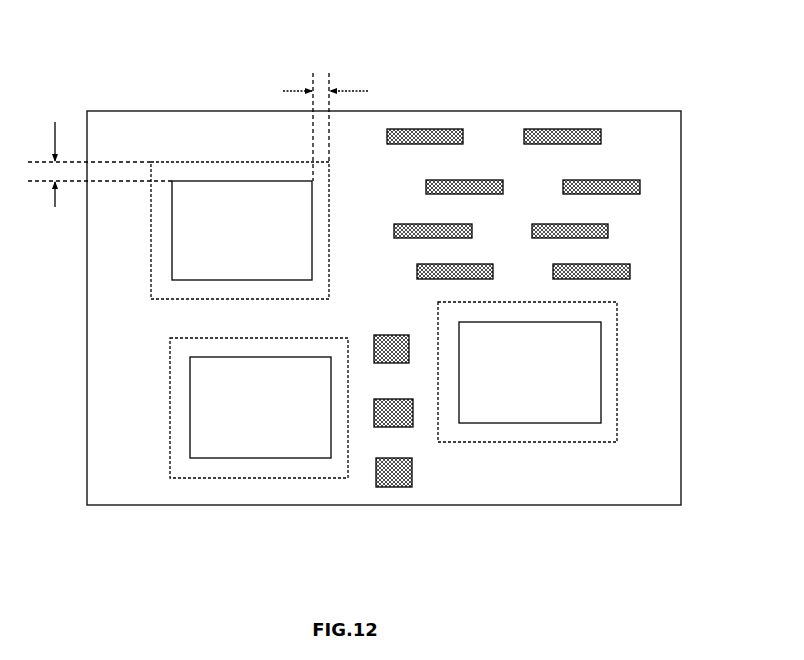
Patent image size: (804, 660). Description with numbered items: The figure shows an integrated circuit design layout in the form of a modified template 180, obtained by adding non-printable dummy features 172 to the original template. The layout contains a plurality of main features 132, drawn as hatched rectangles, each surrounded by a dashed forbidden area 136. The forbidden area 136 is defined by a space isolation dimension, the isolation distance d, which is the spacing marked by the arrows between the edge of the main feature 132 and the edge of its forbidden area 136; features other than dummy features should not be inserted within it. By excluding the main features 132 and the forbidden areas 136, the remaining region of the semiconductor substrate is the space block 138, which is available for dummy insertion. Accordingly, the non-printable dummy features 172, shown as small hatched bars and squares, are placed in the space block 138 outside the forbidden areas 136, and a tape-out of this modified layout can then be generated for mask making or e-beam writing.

The modified template 180 is at (743, 70).
The space block 138 is at (663, 183).
The forbidden area 136 is at (163, 283).
The main feature 132 is at (257, 234).
The non-printable dummy feature 172 is at (415, 144).